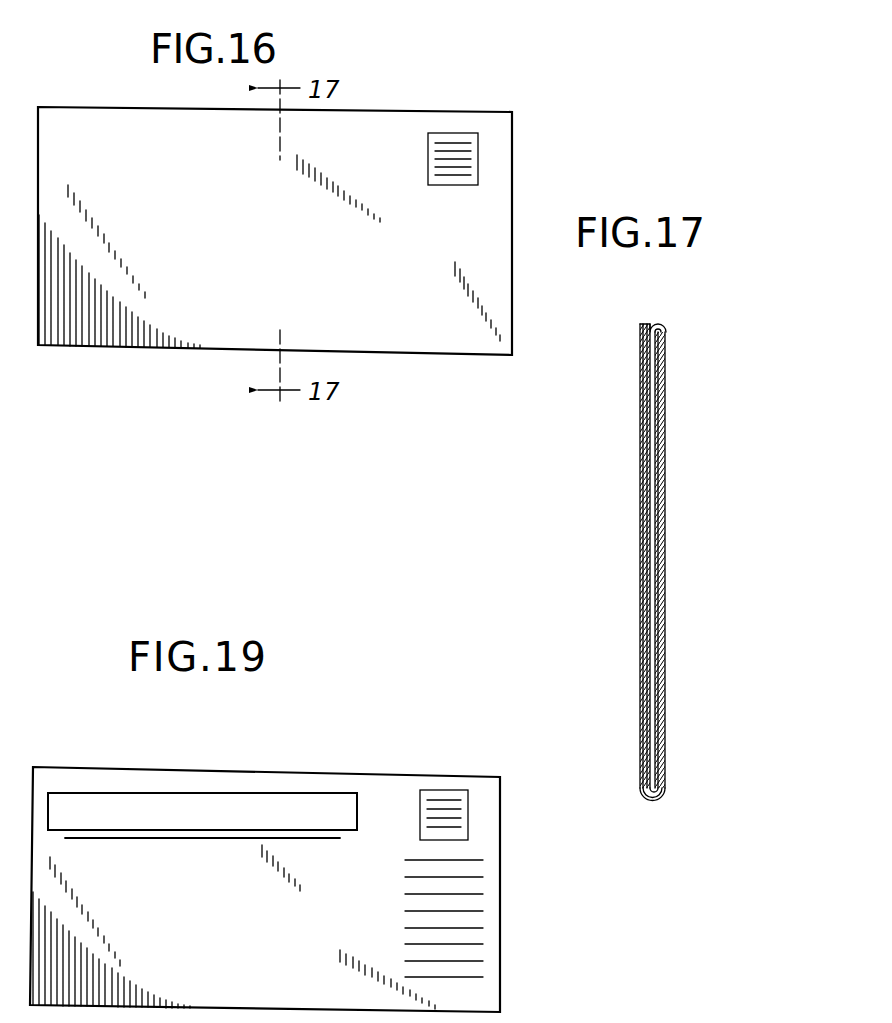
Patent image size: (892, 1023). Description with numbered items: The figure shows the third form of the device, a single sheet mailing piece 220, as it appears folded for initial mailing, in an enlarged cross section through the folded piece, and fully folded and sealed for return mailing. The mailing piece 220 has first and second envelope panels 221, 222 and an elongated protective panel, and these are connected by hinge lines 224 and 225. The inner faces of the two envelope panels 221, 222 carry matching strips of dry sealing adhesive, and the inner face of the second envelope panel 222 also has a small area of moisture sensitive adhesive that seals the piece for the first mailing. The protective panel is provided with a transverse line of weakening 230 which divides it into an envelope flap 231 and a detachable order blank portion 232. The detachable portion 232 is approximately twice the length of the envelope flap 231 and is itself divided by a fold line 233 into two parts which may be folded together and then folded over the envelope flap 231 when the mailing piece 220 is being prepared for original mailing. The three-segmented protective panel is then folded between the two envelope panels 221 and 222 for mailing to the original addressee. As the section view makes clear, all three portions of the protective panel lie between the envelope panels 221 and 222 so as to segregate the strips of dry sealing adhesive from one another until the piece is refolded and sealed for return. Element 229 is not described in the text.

In FIG. 16, the single sheet mailing piece 220 is at (527, 161).
In FIG. 17, the single sheet mailing piece 220 is at (654, 566).
In FIG. 19, the single sheet mailing piece 220 is at (506, 898).
In FIG. 17, the first envelope panel 221 is at (666, 515).
In FIG. 19, the first envelope panel 221 is at (490, 808).
In FIG. 16, the second envelope panel 222 is at (476, 122).
In FIG. 17, the second envelope panel 222 is at (640, 400).
In FIG. 17, the hinge line 224 is at (651, 805).
In FIG. 17, the hinge line 225 is at (660, 326).
In FIG. 17, the fold edge 229 is at (645, 325).
In FIG. 17, the transverse line of weakening 230 is at (660, 783).
In FIG. 17, the envelope flap 231 is at (647, 538).
In FIG. 17, the detachable order blank portion 232 is at (660, 668).
In FIG. 17, the fold line 233 is at (662, 338).